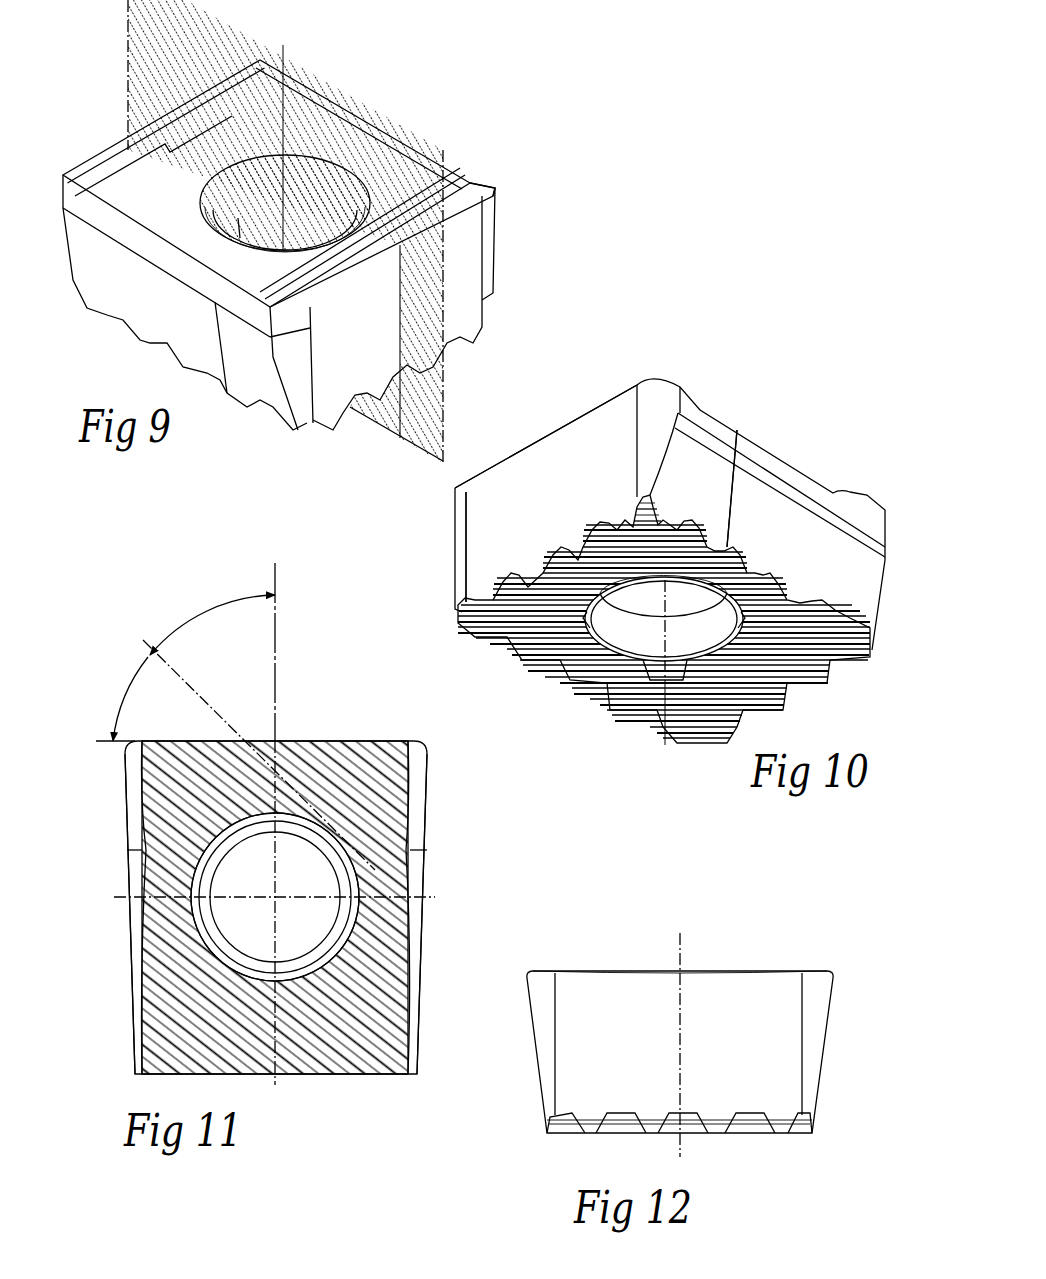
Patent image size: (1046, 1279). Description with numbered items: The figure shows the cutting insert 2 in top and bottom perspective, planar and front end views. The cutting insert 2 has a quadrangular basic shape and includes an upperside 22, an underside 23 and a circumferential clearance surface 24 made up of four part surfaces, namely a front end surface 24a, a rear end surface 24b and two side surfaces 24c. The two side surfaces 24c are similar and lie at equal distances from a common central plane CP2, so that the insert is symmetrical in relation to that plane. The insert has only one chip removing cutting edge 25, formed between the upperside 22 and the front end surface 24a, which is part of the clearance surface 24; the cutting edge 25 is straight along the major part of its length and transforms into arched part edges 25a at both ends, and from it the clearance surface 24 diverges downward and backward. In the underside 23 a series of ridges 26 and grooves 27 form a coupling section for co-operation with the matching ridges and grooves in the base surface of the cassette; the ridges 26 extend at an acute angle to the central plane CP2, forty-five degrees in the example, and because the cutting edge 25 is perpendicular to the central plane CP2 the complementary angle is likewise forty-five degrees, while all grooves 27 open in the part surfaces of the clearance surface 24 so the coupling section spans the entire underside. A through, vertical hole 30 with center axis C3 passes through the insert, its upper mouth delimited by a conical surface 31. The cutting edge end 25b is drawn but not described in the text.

In FIG. 9, the cutting insert 2 is at (340, 256).
In FIG. 12, the upperside 22 is at (748, 958).
In FIG. 12, the underside 23 is at (686, 1122).
In FIG. 10, the clearance surface 24 is at (622, 565).
In FIG. 9, the front end surface 24a is at (404, 309).
In FIG. 10, the front end surface 24a is at (513, 540).
In FIG. 11, the front end surface 24a is at (338, 739).
In FIG. 12, the front end surface 24a is at (733, 1039).
In FIG. 11, the rear end surface 24b is at (300, 1078).
In FIG. 9, the side surfaces 24c is at (185, 302).
In FIG. 10, the side surfaces 24c is at (773, 488).
In FIG. 11, the side surfaces 24c is at (137, 965).
In FIG. 12, the side surfaces 24c is at (531, 1050).
In FIG. 9, the cutting edge 25 is at (466, 213).
In FIG. 10, the cutting edge 25 is at (566, 420).
In FIG. 9, the arched part edges 25a is at (291, 310).
In FIG. 9, the cutting edge end 25b is at (472, 183).
In FIG. 10, the ridges 26 is at (653, 619).
In FIG. 11, the ridges 26 is at (150, 778).
In FIG. 12, the ridges 26 is at (652, 1133).
In FIG. 10, the grooves 27 is at (520, 642).
In FIG. 11, the grooves 27 is at (163, 822).
In FIG. 12, the grooves 27 is at (622, 1113).
In FIG. 10, the through hole 30 is at (630, 632).
In FIG. 9, the conical surface 31 is at (217, 193).
In FIG. 9, the center axis C3 is at (283, 57).
In FIG. 10, the center axis C3 is at (662, 737).
In FIG. 9, the central plane CP2 is at (128, 50).
In FIG. 11, the central plane CP2 is at (278, 650).
In FIG. 12, the central plane CP2 is at (677, 945).